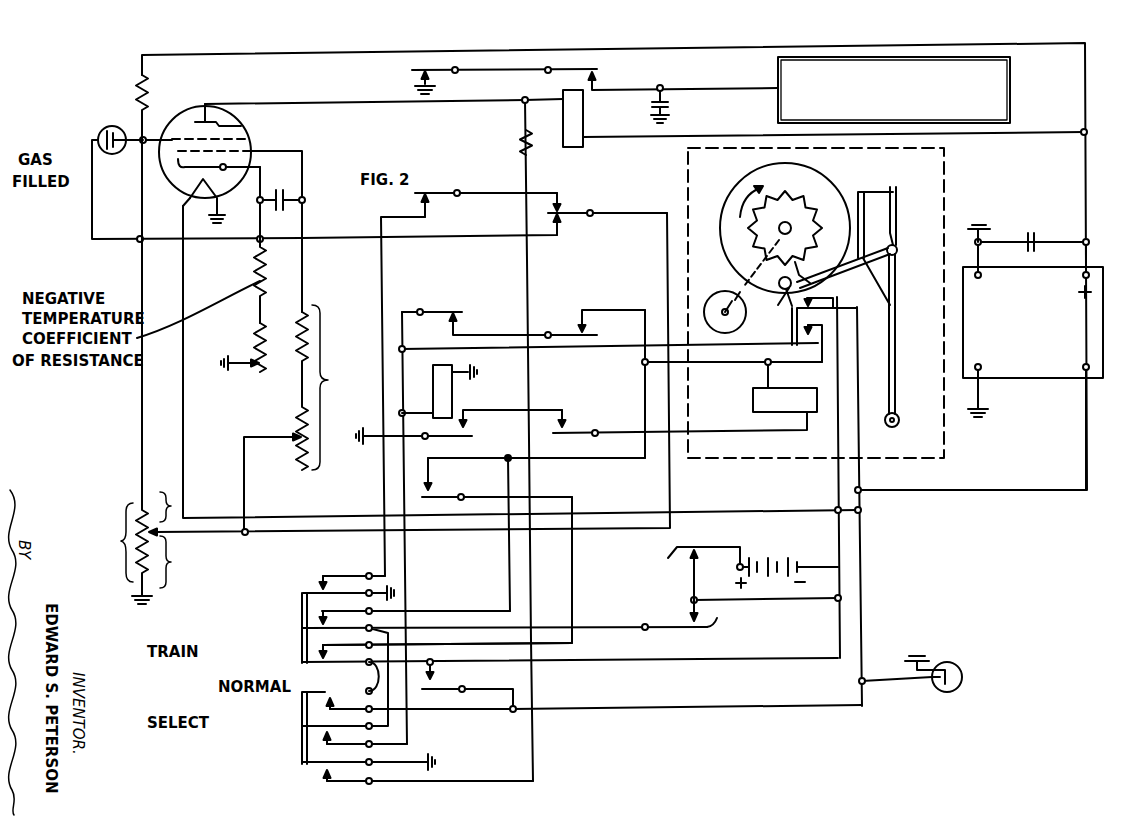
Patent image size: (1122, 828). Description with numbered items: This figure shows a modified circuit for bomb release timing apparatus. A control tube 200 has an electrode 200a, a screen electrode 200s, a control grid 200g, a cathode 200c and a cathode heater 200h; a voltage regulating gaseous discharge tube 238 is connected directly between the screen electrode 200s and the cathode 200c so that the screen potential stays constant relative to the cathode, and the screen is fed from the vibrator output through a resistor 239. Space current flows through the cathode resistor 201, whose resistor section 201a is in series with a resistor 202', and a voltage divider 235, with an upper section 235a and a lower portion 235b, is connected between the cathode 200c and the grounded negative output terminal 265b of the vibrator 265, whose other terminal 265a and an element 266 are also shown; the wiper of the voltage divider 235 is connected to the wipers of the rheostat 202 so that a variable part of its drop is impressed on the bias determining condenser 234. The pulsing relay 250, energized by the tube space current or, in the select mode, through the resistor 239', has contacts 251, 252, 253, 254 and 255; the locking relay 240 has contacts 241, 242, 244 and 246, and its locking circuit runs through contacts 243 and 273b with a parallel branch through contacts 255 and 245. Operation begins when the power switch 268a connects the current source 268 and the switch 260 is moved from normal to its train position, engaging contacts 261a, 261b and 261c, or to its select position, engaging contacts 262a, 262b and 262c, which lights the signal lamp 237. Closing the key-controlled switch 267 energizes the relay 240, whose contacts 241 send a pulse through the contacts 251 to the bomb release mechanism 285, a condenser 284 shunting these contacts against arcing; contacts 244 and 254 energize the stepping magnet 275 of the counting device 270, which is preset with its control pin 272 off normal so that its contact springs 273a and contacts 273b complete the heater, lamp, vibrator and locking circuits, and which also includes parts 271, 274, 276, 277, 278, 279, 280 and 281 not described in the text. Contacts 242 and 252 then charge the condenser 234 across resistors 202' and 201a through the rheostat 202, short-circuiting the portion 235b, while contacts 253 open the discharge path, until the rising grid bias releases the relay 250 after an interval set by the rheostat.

The resistor 239 is at (109, 105).
The control tube 200 is at (185, 116).
The voltage regulating gaseous discharge tube 238 is at (100, 128).
The anode 200a is at (242, 124).
The screen electrode 200s is at (252, 139).
The control grid 200g is at (168, 170).
The cathode 200c is at (178, 188).
The cathode heater 200h is at (182, 206).
The bias determining condenser 234 is at (296, 205).
The contacts 241 is at (422, 82).
The contacts 251 is at (598, 76).
The pulsing relay 250 is at (584, 112).
The condenser 284 is at (672, 106).
The bomb release mechanism 285 is at (1010, 111).
The resistor 239' is at (497, 140).
The contacts 252 is at (562, 200).
The contacts 242 is at (432, 210).
The contacts 253 is at (575, 222).
The resistor 202' is at (231, 281).
The resistor section 201a is at (255, 344).
The cathode resistor 201 is at (259, 382).
The rheostat 202 is at (333, 387).
The contacts 245 is at (457, 320).
The contacts 255 is at (578, 322).
The locking relay 240 is at (452, 398).
The contacts 244 is at (470, 432).
The contacts 254 is at (568, 420).
The contacts 243 is at (432, 486).
The voltage divider 235 is at (120, 540).
The resistor section 235a is at (171, 506).
The lower portion 235b is at (171, 562).
The switch 260 is at (337, 553).
The contacts 261a is at (320, 578).
The contacts 261b is at (320, 613).
The contacts 261c is at (320, 647).
The contacts 262a is at (322, 700).
The contacts 262b is at (322, 736).
The key contacts 262c is at (322, 776).
The contacts 246 is at (438, 684).
The key-controlled switch 267 is at (695, 612).
The power switch 268a is at (697, 548).
The current source 268 is at (806, 530).
The signal lamp 237 is at (961, 675).
The counting device 270 is at (926, 178).
The disk 271 is at (748, 183).
The ratchet wheel 274 is at (805, 207).
The frame 279 is at (872, 197).
The spring 280 is at (897, 226).
The cam 281 is at (735, 292).
The control pin 272 is at (796, 288).
The contact springs 273a is at (806, 304).
The contacts 273b is at (812, 345).
The pawl lever 278 is at (893, 256).
The armature bar 277 is at (895, 306).
The pivot 276 is at (893, 388).
The stepping magnet 275 is at (752, 398).
The capacitor 266 is at (1032, 236).
The output terminal 265b is at (981, 277).
The battery terminal 265a is at (1052, 338).
The vibrator 265 is at (1050, 373).